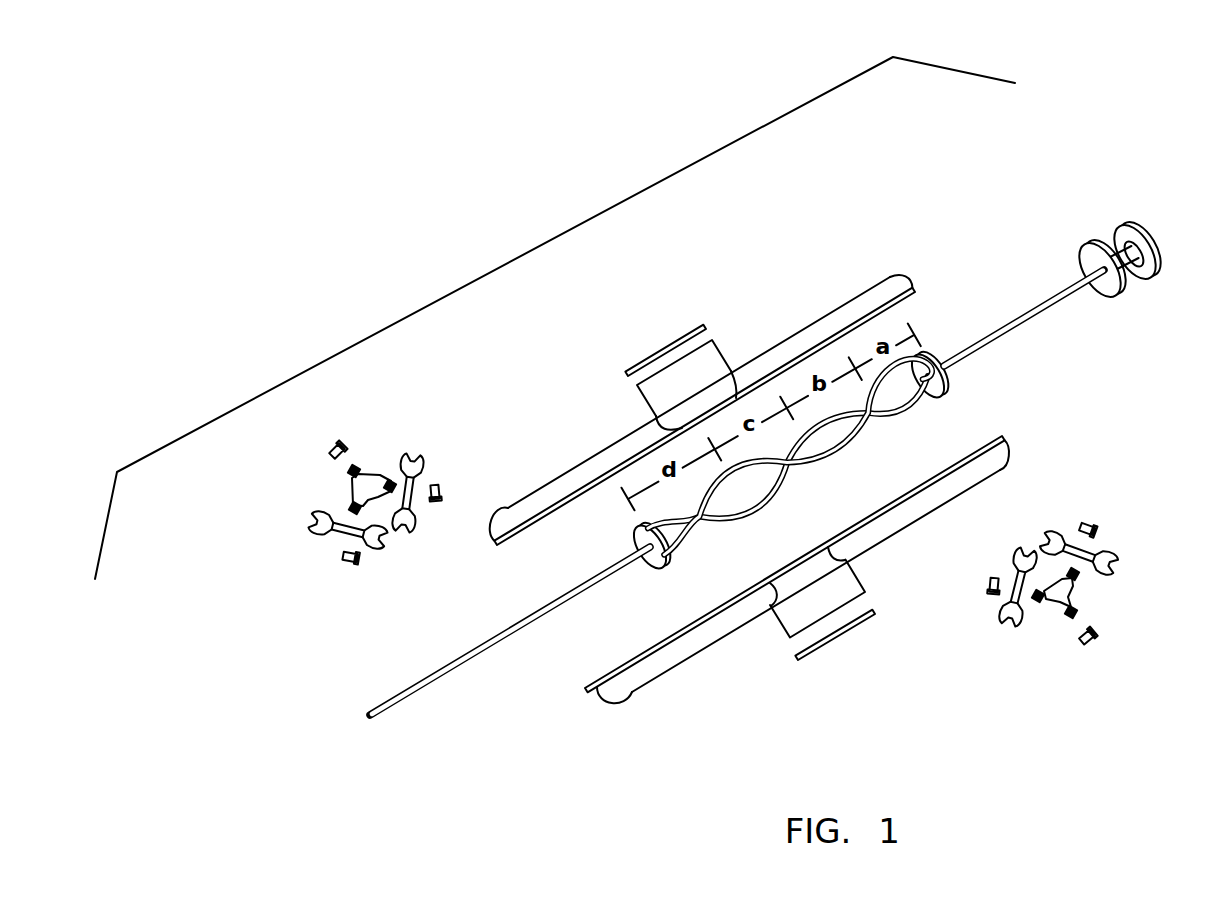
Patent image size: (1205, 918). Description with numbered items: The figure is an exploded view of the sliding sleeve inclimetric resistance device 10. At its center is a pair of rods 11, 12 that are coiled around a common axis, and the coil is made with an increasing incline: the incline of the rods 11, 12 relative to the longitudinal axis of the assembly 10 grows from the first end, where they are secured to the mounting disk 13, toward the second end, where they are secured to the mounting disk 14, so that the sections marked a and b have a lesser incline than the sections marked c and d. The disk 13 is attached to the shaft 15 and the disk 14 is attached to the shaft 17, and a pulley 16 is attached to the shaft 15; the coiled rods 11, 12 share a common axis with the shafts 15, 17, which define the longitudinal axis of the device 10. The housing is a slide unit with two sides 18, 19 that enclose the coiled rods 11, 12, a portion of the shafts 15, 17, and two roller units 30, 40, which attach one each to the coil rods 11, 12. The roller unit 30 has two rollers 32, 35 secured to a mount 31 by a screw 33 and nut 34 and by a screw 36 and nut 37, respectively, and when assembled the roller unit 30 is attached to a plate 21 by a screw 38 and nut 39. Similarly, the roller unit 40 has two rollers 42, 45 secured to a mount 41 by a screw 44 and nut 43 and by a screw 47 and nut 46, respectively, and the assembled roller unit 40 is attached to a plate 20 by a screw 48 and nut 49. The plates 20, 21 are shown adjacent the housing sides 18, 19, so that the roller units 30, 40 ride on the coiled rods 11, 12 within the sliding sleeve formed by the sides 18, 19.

The sliding sleeve inclimetric resistance device 10 is at (615, 830).
The coiled rod 11 is at (799, 476).
The coiled rod 12 is at (863, 441).
The mounting disk 13 is at (952, 381).
The mounting disk 14 is at (633, 537).
The shaft 15 is at (1019, 320).
The pulley 16 is at (1147, 226).
The shaft 17 is at (525, 622).
The side of slide unit 18 is at (790, 335).
The side of slide unit 19 is at (698, 654).
The plate 20 is at (660, 350).
The plate 21 is at (833, 641).
The roller unit 30 is at (1057, 595).
The mount 31 is at (1080, 594).
The roller 32 is at (1053, 531).
The screw 33 is at (1080, 577).
The nut 34 is at (1088, 522).
The roller 35 is at (1004, 619).
The screw 36 is at (1039, 604).
The nut 37 is at (988, 581).
The screw 38 is at (1079, 611).
The nut 39 is at (1091, 640).
The roller unit 40 is at (361, 496).
The mount 41 is at (352, 488).
The roller 42 is at (427, 457).
The nut 43 is at (444, 486).
The screw 44 is at (392, 480).
The roller 45 is at (373, 548).
The nut 46 is at (349, 568).
The screw 47 is at (349, 508).
The screw 48 is at (356, 466).
The nut 49 is at (336, 440).